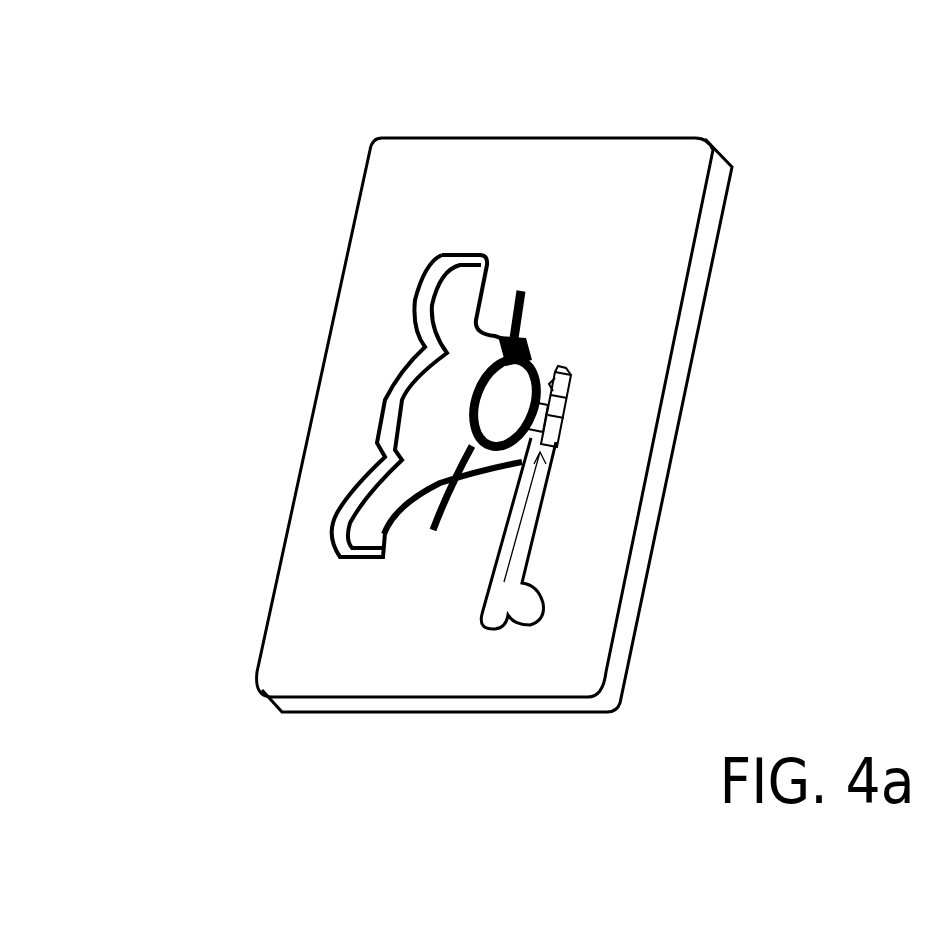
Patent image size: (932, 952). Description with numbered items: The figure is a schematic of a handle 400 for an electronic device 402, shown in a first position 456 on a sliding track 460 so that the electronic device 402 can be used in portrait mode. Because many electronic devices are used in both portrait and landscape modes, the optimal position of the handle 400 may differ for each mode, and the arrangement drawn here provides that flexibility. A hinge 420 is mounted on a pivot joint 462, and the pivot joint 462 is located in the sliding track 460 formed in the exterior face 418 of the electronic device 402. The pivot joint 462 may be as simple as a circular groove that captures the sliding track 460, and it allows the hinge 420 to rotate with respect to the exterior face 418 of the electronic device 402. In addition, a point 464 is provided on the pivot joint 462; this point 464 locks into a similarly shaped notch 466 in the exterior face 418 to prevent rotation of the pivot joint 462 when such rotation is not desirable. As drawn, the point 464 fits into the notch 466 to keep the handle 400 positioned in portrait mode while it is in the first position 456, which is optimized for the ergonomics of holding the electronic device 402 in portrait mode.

The handle 400 is at (129, 161).
The electronic device 402 is at (673, 247).
The exterior face 418 is at (483, 178).
The hinge 420 is at (570, 405).
The first position 456 is at (548, 506).
The sliding track 460 is at (502, 578).
The pivot joint 462 is at (547, 440).
The point 464 is at (570, 377).
The notch 466 is at (560, 370).